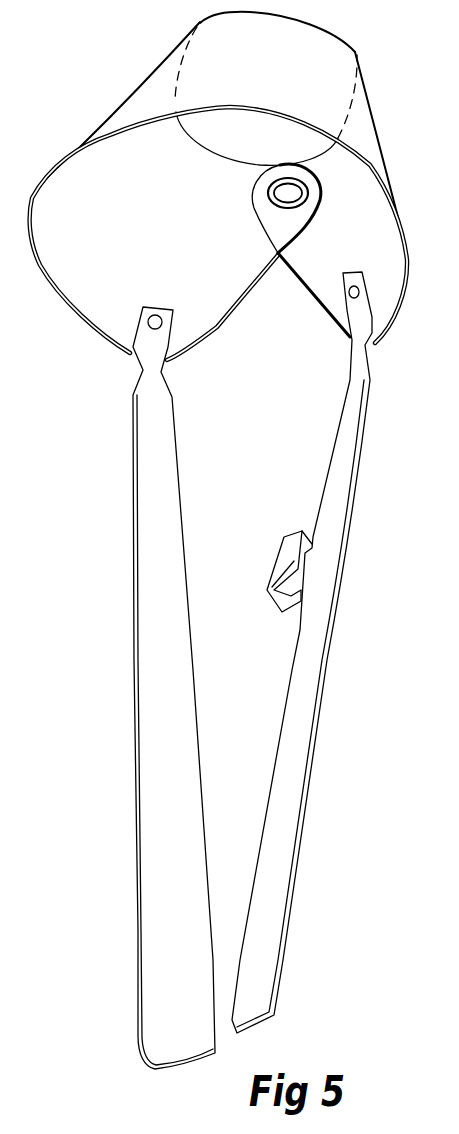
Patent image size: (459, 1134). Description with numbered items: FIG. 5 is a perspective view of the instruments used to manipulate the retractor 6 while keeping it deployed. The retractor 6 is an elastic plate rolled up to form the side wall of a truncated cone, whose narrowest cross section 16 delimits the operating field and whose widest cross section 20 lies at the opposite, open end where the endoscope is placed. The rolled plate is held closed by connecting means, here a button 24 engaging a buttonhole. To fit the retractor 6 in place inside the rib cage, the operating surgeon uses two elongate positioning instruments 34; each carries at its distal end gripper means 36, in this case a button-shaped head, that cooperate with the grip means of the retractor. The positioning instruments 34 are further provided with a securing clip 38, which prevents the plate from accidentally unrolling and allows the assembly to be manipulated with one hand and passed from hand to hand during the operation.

The retractor 6 is at (226, 536).
The narrowest cross section 16 is at (327, 23).
The widest cross section 20 is at (62, 306).
The button 24 is at (277, 208).
The positioning instrument 34 is at (133, 826).
The gripper means 36 is at (176, 288).
The securing clip 38 is at (287, 536).